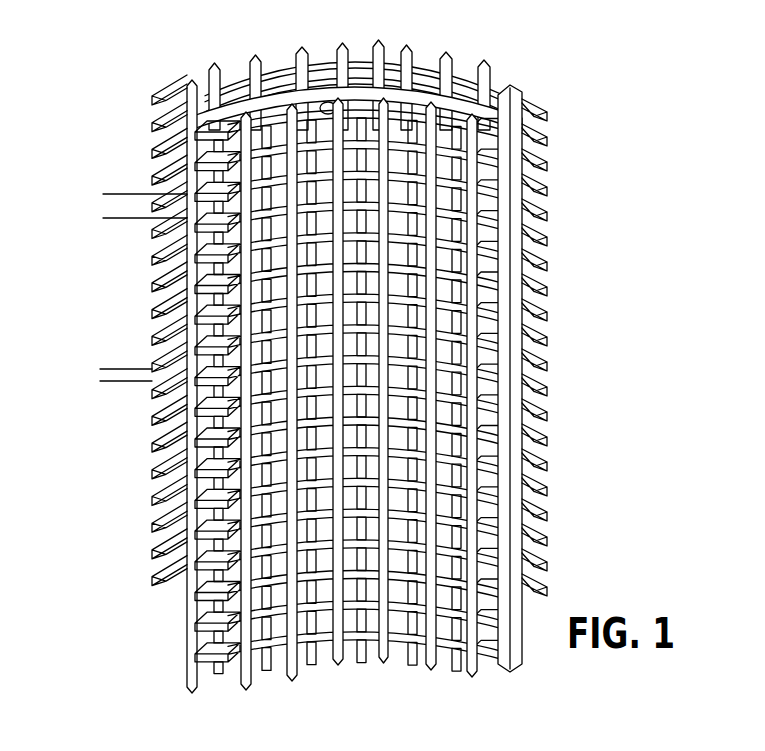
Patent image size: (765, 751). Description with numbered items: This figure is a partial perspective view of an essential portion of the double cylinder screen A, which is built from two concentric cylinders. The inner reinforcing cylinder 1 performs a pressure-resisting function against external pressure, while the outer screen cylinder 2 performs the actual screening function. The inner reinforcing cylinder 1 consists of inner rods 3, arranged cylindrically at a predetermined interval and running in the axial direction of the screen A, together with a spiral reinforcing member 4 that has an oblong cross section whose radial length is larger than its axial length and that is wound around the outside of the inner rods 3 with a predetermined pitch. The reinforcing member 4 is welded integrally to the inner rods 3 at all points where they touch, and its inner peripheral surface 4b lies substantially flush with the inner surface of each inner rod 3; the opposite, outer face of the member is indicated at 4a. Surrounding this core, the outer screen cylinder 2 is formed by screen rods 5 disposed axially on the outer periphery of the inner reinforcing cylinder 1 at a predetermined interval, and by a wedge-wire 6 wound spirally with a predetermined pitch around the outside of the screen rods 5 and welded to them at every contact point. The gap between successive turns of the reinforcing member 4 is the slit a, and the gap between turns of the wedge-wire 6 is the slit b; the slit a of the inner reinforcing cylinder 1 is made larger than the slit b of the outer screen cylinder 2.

The inner reinforcing cylinder 1 is at (231, 117).
The outer screen cylinder 2 is at (136, 291).
The inner rods 3 is at (506, 322).
The spiral reinforcing member 4 is at (507, 257).
The outer peripheral surface of reinforcing member 4a is at (323, 104).
The inner peripheral surface of reinforcing member 4b is at (236, 452).
The screen rods 5 is at (510, 100).
The wedge-wire 6 is at (540, 154).
The double cylinder screen A is at (580, 750).
The slit of reinforcing member a is at (101, 178).
The slit of outer screen cylinder b is at (99, 355).